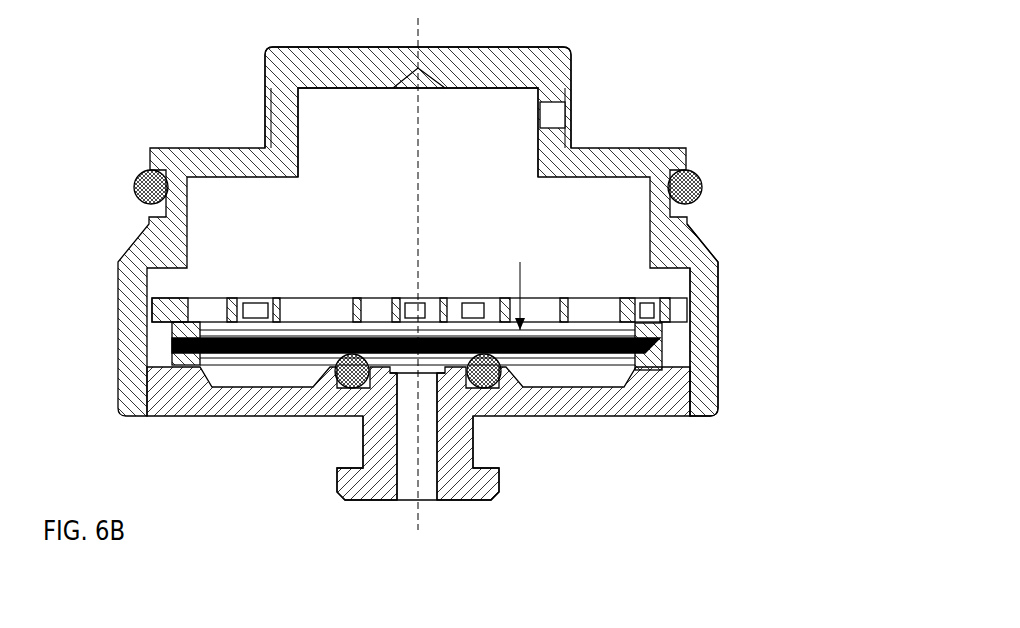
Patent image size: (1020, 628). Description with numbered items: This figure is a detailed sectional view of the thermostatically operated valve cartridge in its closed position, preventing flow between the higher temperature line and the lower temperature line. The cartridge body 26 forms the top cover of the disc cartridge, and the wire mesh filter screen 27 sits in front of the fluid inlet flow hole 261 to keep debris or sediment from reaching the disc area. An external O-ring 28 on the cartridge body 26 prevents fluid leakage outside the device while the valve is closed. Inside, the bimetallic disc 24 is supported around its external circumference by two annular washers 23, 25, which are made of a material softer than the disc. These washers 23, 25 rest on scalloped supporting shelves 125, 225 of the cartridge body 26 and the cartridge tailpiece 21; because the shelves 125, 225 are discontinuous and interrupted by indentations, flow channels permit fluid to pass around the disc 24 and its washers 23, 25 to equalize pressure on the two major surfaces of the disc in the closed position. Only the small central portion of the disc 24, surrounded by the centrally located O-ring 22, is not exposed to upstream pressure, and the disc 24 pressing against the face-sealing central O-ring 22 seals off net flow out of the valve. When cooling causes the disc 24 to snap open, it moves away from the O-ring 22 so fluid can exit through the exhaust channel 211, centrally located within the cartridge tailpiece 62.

The cartridge tailpiece 21 is at (257, 420).
The exhaust channel 211 is at (425, 483).
The central O-ring 22 is at (497, 388).
The supporting shelf 225 is at (648, 374).
The annular washer 23 is at (720, 412).
The bimetallic disc 24 is at (611, 356).
The annular washer 25 is at (597, 296).
The cartridge body 26 is at (690, 147).
The fluid inlet flow hole 261 is at (539, 114).
The wire mesh filter screen 27 is at (574, 99).
The external O-ring 28 is at (705, 175).
The supporting shelf 125 is at (678, 318).
The cartridge tailpiece 62 is at (368, 503).